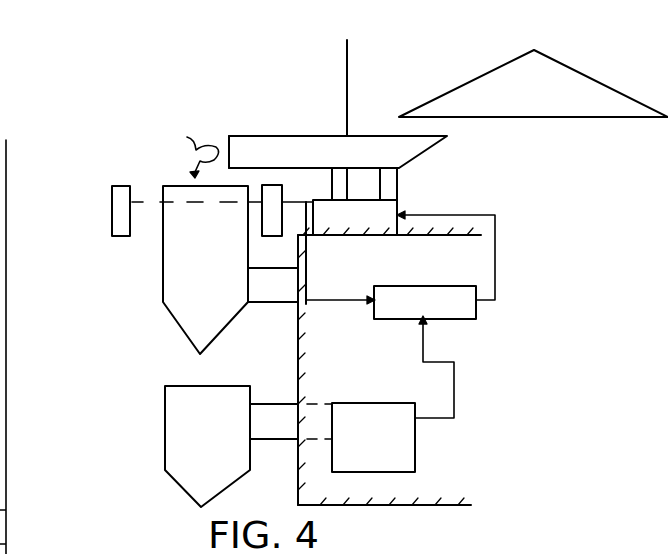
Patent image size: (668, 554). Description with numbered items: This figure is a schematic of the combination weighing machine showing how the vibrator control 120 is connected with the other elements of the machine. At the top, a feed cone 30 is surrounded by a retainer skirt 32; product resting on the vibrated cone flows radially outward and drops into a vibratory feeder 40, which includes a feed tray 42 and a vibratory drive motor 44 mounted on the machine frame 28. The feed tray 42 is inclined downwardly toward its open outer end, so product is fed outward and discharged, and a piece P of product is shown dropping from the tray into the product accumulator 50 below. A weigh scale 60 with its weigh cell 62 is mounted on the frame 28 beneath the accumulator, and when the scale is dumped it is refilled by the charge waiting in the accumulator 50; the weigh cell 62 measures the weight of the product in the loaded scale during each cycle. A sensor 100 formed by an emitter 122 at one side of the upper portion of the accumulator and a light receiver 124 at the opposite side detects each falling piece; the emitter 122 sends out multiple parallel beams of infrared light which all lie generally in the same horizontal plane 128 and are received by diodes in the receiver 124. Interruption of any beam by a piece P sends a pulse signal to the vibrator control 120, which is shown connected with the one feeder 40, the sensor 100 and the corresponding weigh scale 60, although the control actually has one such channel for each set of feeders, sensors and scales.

The machine frame 28 is at (298, 330).
The feed cone 30 is at (561, 63).
The retainer skirt 32 is at (347, 56).
The vibratory feeder 40 is at (323, 132).
The feed tray 42 is at (266, 136).
The vibratory drive motor 44 is at (377, 227).
The product accumulator 50 is at (163, 262).
The weigh scale 60 is at (165, 415).
The weigh cell 62 is at (351, 403).
The sensor 100 is at (106, 202).
The vibrator control 120 is at (449, 320).
The emitter 122 is at (112, 218).
The light receiver 124 is at (276, 185).
The horizontal plane 128 is at (211, 204).
The piece of product P is at (195, 152).